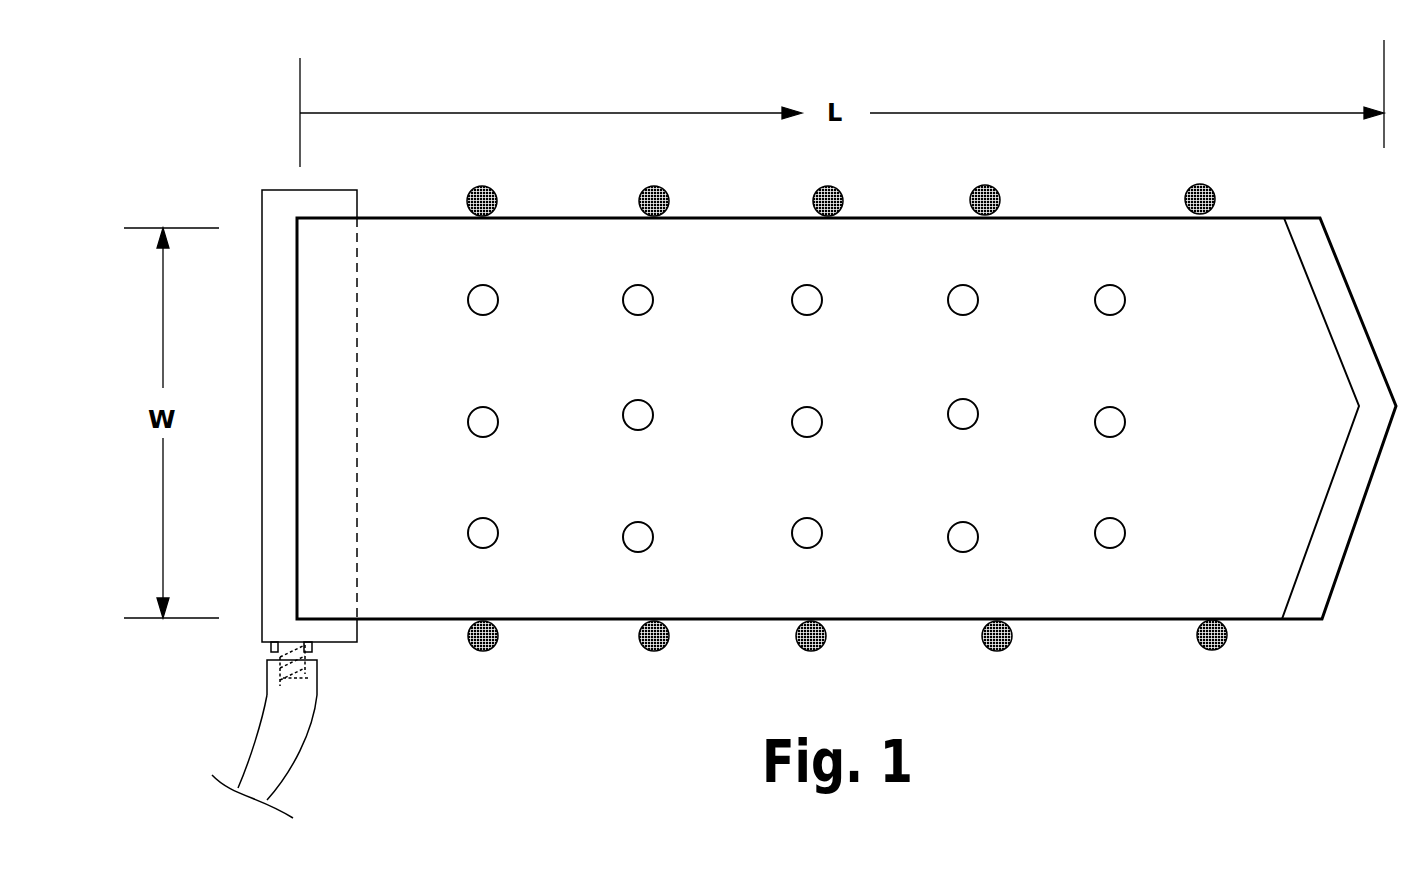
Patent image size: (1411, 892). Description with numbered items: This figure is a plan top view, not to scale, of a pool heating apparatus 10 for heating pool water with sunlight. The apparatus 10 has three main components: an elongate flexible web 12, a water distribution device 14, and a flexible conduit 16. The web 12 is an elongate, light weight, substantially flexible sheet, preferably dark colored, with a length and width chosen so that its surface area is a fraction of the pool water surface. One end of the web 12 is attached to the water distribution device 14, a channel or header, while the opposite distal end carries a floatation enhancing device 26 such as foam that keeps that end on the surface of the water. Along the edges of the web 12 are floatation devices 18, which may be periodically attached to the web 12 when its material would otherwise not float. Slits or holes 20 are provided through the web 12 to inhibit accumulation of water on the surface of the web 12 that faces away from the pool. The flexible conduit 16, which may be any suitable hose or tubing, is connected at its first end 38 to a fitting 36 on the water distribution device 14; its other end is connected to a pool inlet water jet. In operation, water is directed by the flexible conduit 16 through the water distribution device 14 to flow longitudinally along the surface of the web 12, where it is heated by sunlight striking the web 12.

The pool heating apparatus 10 is at (846, 386).
The elongate flexible web 12 is at (1064, 384).
The water distribution device 14 is at (320, 202).
The flexible conduit 16 is at (287, 748).
The floatation devices 18 is at (497, 200).
The slits or holes 20 is at (1117, 303).
The floatation enhancing device 26 is at (1361, 337).
The fitting 36 is at (272, 654).
The first end 38 is at (317, 666).